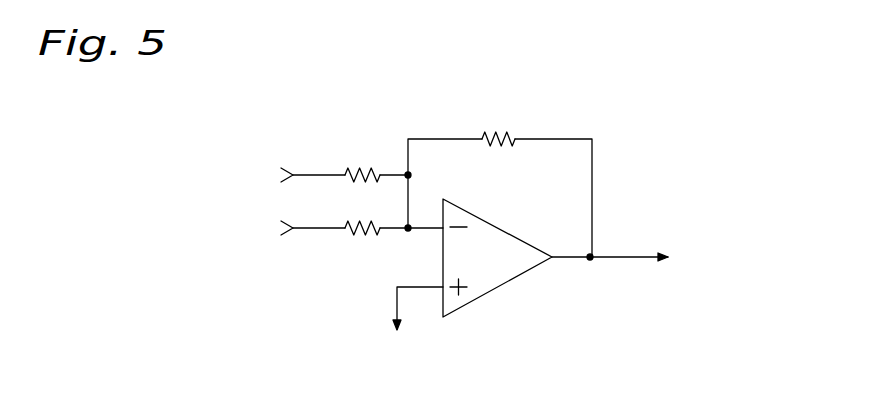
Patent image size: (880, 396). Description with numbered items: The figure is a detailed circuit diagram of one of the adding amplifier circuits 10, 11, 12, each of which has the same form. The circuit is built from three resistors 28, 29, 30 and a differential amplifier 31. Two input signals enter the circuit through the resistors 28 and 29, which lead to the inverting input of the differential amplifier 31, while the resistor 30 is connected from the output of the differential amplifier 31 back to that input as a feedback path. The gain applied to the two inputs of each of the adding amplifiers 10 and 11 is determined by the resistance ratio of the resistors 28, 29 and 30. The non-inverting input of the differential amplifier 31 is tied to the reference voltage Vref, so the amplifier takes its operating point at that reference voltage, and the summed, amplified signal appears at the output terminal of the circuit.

The adding amplifier circuit 10 is at (488, 213).
The adding amplifier circuit 11 is at (488, 230).
The adding amplifier circuit 12 is at (488, 230).
The resistor 28 is at (361, 163).
The resistor 29 is at (367, 239).
The resistor 30 is at (503, 148).
The differential amplifier 31 is at (513, 277).